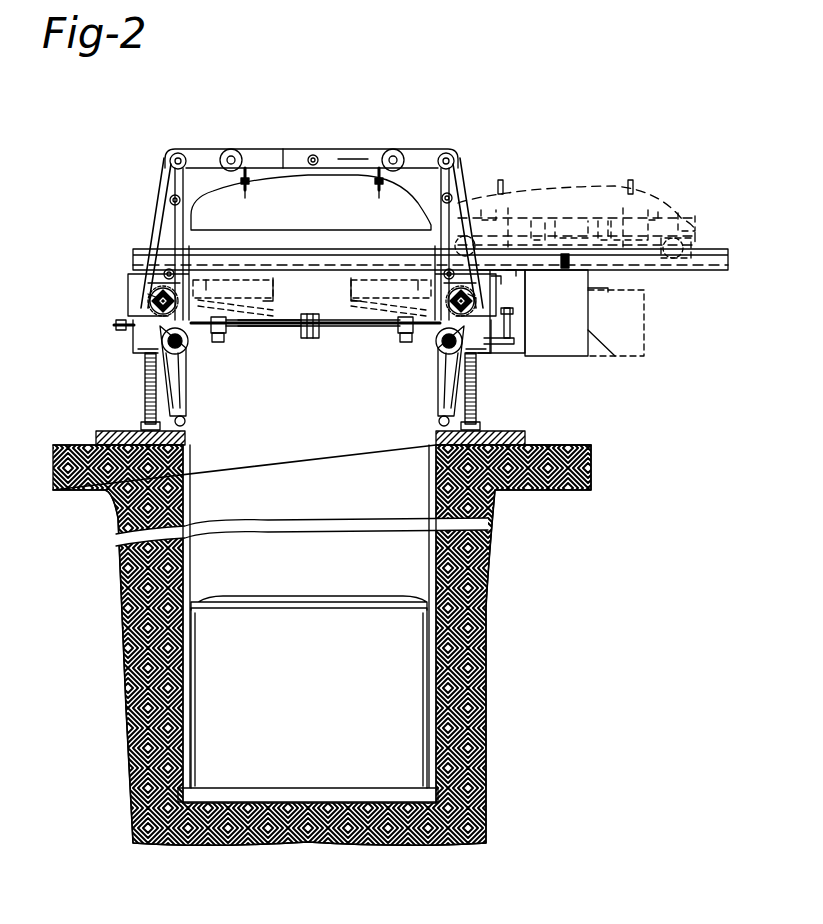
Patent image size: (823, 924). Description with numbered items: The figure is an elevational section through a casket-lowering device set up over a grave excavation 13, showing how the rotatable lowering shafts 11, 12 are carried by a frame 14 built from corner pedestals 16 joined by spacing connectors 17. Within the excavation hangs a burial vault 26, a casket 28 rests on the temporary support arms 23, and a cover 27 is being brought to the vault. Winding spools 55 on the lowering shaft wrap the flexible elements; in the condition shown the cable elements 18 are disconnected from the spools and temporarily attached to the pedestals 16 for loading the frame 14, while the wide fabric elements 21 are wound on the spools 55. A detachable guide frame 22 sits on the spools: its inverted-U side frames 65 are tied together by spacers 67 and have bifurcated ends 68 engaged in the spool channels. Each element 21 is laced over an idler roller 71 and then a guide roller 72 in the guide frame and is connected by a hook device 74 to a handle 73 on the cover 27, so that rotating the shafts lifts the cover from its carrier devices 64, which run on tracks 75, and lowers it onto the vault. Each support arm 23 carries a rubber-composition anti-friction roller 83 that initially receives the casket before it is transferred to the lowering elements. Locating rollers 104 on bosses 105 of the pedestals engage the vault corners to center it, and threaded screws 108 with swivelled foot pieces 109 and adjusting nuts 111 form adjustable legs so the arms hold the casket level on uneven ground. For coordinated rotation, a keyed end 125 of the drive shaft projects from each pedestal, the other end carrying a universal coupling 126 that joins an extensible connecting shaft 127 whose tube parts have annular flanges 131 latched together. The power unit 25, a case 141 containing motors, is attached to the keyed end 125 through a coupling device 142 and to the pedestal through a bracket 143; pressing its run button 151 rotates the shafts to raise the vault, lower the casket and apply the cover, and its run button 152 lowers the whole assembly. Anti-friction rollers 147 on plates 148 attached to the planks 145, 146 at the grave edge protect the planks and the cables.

The rotatable lowering shaft 11 is at (148, 296).
The rotatable lowering shaft 12 is at (468, 292).
The grave excavation 13 is at (318, 792).
The frame 14 is at (132, 232).
The corner support or pedestal 16 is at (120, 266).
The spacing connector 17 is at (262, 299).
The flexible element 18 is at (190, 524).
The flexible element 21 is at (205, 142).
The detachable guide frame 22 is at (280, 152).
The temporary support arm 23 is at (310, 286).
The power unit 25 is at (556, 313).
The burial vault 26 is at (309, 698).
The cover 27 is at (443, 216).
The casket 28 is at (311, 592).
The winding spool 55 is at (143, 290).
The carrier device 64 is at (640, 206).
The side frame 65 is at (364, 150).
The spacer 67 is at (304, 147).
The bifurcated end 68 is at (140, 273).
The idler roller 71 is at (161, 153).
The guide roller 72 is at (235, 139).
The handle 73 is at (237, 186).
The hook device 74 is at (241, 170).
The track 75 is at (333, 248).
The anti-friction roller 83 is at (236, 284).
The locating roller 104 is at (205, 336).
The boss 105 is at (153, 334).
The threaded screw 108 is at (137, 375).
The foot piece 109 is at (137, 416).
The adjusting nut 111 is at (136, 342).
The keyed end 125 is at (106, 320).
The universal coupling 126 is at (240, 327).
The extensible connecting shaft 127 is at (274, 320).
The annular flange 131 is at (302, 332).
The case 141 is at (580, 350).
The coupling device 142 is at (505, 313).
The bracket 143 is at (505, 270).
The plank 145 is at (88, 437).
The plank 146 is at (525, 438).
The anti-friction roller 147 is at (178, 412).
The plate 148 is at (95, 423).
The run button 151 is at (575, 265).
The run button 152 is at (508, 268).